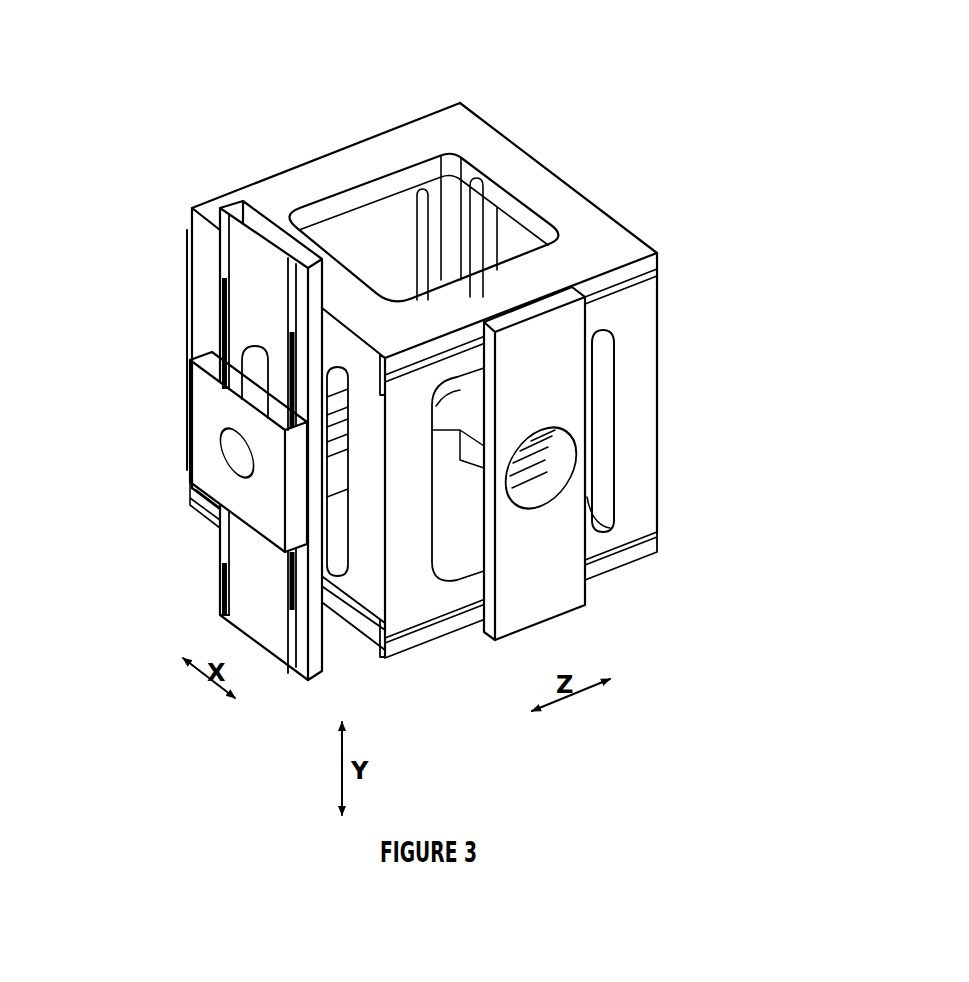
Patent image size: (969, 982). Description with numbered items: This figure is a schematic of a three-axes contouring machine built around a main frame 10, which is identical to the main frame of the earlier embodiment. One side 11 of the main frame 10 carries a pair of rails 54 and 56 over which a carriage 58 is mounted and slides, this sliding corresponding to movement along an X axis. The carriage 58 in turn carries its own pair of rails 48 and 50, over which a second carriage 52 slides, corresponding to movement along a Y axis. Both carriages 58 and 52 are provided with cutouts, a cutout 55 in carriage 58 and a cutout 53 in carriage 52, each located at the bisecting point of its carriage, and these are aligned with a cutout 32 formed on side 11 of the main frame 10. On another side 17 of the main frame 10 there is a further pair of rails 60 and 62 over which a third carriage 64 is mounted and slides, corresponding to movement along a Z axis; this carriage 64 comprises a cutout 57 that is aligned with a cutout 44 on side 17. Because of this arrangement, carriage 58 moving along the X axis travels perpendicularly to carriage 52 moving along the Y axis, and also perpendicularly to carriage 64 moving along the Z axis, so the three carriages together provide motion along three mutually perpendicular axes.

The main frame 10 is at (542, 183).
The side of main frame 11 is at (202, 236).
The side of main frame 17 is at (640, 326).
The cutout 32 is at (334, 556).
The cutout 44 is at (603, 422).
The rail 48 is at (219, 270).
The rail 50 is at (286, 327).
The carriage 52 is at (171, 431).
The cutout 53 is at (235, 457).
The rail 54 is at (364, 363).
The cutout 55 is at (262, 370).
The rail 56 is at (386, 630).
The cutout 57 is at (551, 480).
The carriage 58 is at (239, 602).
The rail 60 is at (659, 268).
The rail 62 is at (661, 556).
The carriage 64 is at (639, 520).